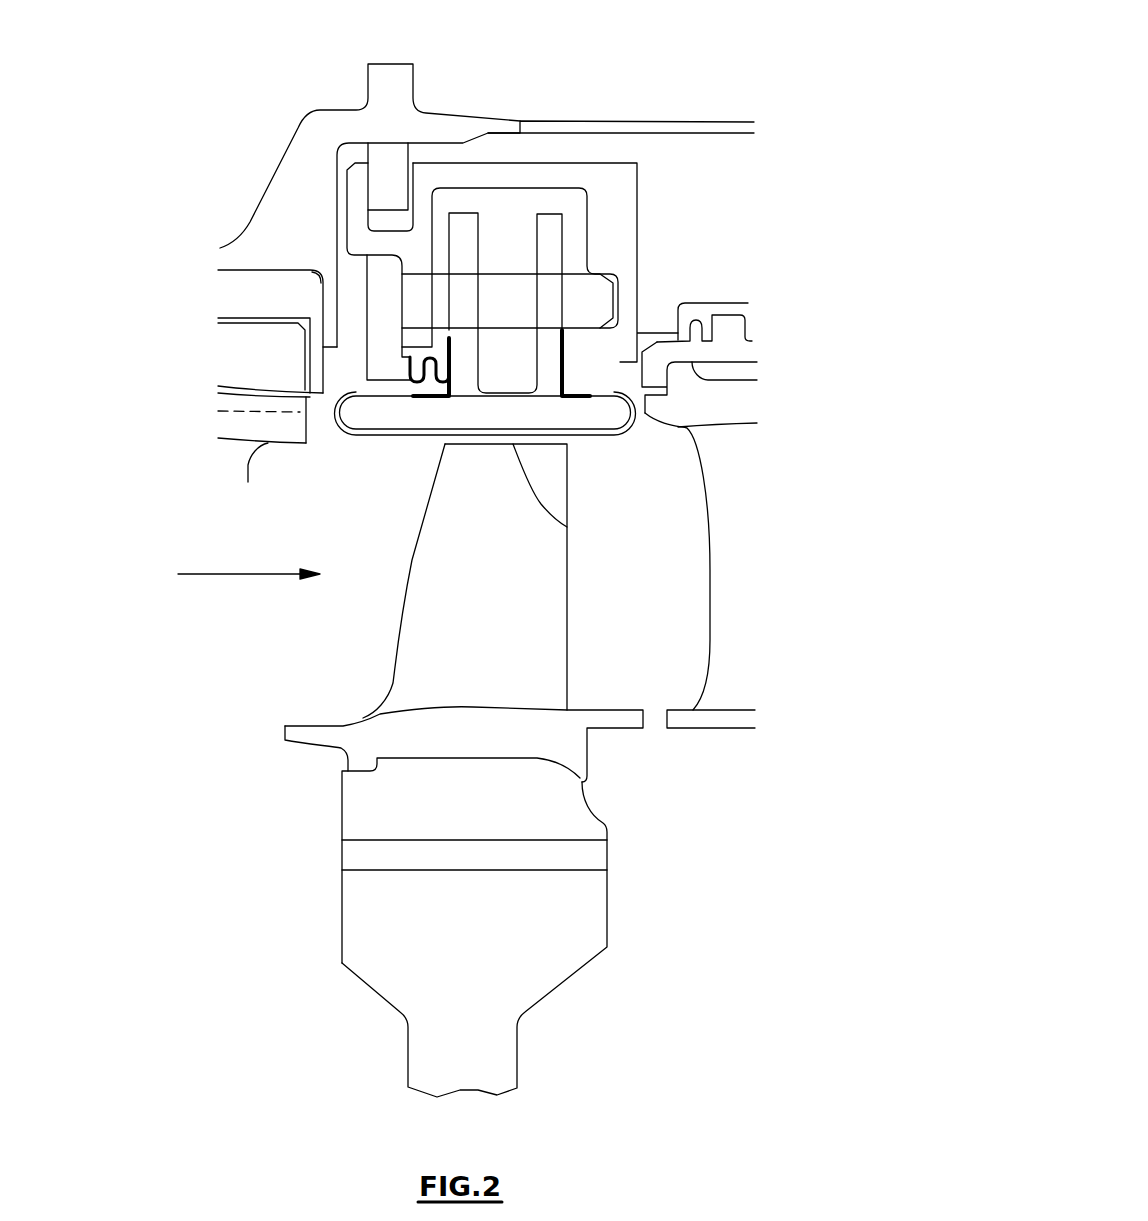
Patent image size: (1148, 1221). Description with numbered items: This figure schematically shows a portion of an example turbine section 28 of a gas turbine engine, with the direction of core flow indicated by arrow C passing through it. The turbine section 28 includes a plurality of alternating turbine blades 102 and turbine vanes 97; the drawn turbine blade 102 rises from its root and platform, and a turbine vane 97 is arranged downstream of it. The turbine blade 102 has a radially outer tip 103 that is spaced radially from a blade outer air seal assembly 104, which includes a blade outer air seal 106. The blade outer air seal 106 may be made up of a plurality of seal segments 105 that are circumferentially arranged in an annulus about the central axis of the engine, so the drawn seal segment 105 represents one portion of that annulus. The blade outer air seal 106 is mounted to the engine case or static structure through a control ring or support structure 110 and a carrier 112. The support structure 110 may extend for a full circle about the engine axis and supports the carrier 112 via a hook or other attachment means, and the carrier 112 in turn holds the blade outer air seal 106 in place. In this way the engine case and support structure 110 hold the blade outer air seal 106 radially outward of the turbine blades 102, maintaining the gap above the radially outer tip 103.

The turbine section 28 is at (754, 111).
The turbine vane 97 is at (727, 512).
The turbine blade 102 is at (547, 553).
The radially outer tip 103 is at (567, 527).
The blade outer air seal assembly 104 is at (626, 313).
The seal segment 105 is at (586, 400).
The blade outer air seal 106 is at (602, 422).
The support structure 110 is at (424, 130).
The carrier 112 is at (626, 193).
The core flow direction C is at (225, 573).